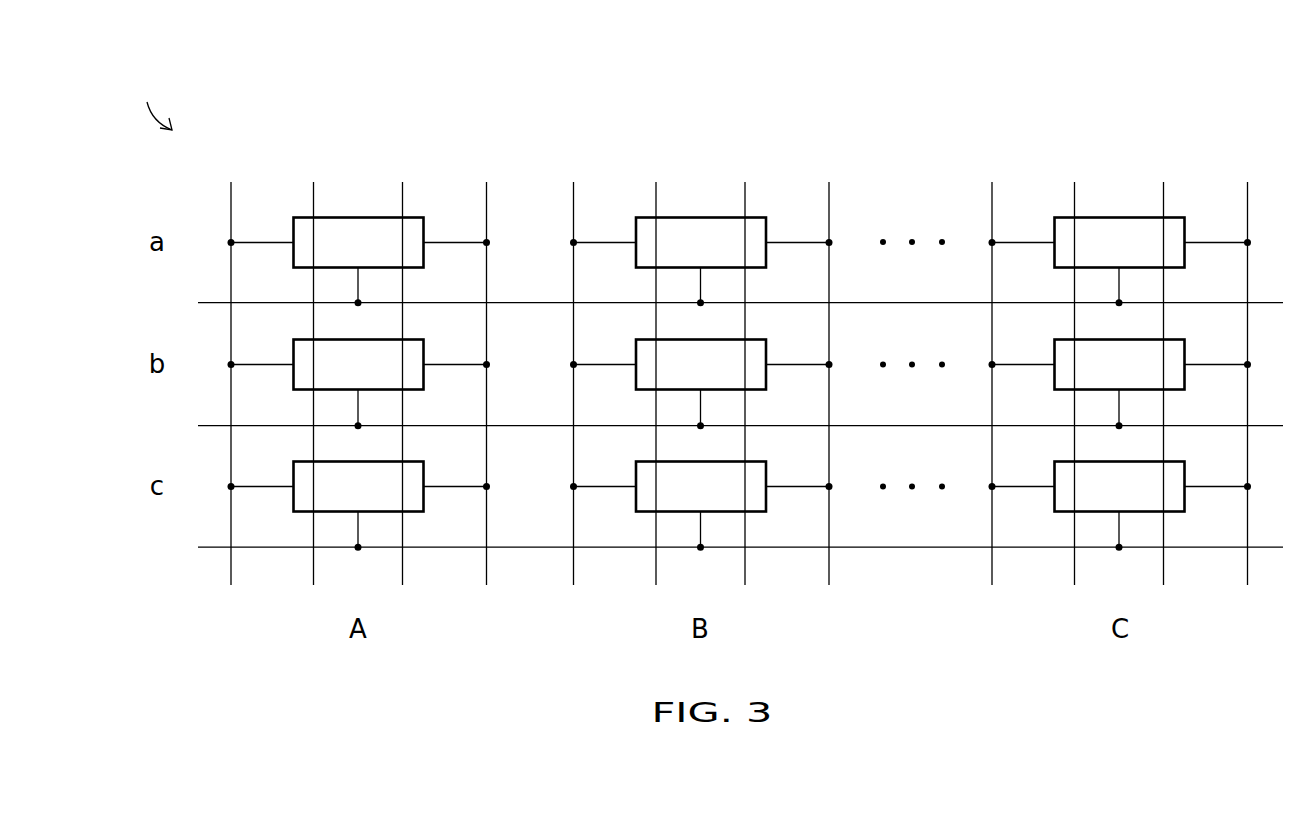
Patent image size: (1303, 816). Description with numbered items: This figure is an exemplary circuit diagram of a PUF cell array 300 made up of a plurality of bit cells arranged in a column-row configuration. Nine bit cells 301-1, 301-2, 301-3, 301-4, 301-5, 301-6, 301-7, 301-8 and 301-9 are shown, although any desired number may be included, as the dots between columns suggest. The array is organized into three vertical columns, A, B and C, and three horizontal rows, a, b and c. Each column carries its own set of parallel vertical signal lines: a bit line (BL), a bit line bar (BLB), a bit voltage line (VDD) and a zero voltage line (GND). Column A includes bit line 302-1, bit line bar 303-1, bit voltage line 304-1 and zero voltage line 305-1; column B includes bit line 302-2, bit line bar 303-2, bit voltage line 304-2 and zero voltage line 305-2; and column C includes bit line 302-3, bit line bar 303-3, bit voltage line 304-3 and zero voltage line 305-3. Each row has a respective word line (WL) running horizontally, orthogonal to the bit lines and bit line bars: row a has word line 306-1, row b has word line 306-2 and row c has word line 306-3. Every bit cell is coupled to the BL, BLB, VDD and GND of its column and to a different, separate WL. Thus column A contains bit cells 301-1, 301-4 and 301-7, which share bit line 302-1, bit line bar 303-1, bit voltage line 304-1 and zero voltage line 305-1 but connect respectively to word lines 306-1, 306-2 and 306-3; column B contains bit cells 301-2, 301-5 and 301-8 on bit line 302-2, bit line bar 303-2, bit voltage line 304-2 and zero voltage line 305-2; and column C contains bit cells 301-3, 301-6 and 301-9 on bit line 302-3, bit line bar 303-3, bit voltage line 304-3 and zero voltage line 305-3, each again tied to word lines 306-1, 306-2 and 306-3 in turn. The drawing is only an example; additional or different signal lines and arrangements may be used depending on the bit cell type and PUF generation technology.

The memory cell array 300 is at (147, 101).
The bit cell 301-1 is at (359, 243).
The bit cell 301-2 is at (701, 243).
The bit cell 301-3 is at (1120, 243).
The bit cell 301-4 is at (359, 365).
The bit cell 301-5 is at (701, 365).
The bit cell 301-6 is at (1120, 365).
The bit cell 301-7 is at (359, 487).
The bit cell 301-8 is at (701, 487).
The bit cell 301-9 is at (1120, 487).
The bit line 302-1 is at (231, 364).
The bit line 302-2 is at (573, 364).
The bit line 302-3 is at (992, 364).
The bit line bar 303-1 is at (487, 364).
The bit line bar 303-2 is at (829, 364).
The bit line bar 303-3 is at (1248, 364).
The bit voltage line 304-1 is at (314, 364).
The bit voltage line 304-2 is at (656, 364).
The bit voltage line 304-3 is at (1075, 364).
The zero voltage line 305-1 is at (403, 364).
The zero voltage line 305-2 is at (745, 364).
The zero voltage line 305-3 is at (1164, 364).
The word line 306-1 is at (704, 294).
The word line 306-2 is at (702, 417).
The word line 306-3 is at (702, 538).